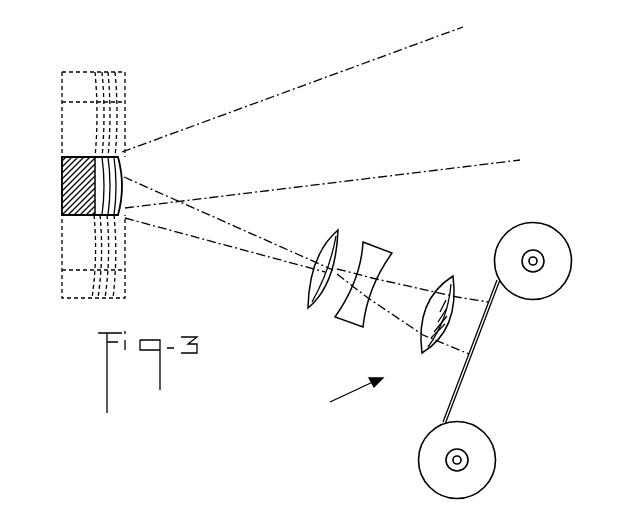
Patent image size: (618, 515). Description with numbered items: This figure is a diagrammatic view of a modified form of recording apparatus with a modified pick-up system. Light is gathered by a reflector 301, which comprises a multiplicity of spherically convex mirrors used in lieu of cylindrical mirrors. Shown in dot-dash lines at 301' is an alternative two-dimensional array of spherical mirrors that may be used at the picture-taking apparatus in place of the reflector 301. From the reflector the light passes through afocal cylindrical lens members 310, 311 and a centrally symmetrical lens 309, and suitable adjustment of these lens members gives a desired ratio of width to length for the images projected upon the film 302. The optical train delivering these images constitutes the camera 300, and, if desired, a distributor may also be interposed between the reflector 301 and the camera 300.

The two-dimensional array of spherical mirrors 301' is at (70, 185).
The reflector 301 is at (69, 197).
The afocal cylindrical lens member 311 is at (308, 296).
The afocal cylindrical lens member 310 is at (355, 320).
The centrally symmetrical lens 309 is at (447, 281).
The film 302 is at (460, 388).
The camera 300 is at (340, 398).